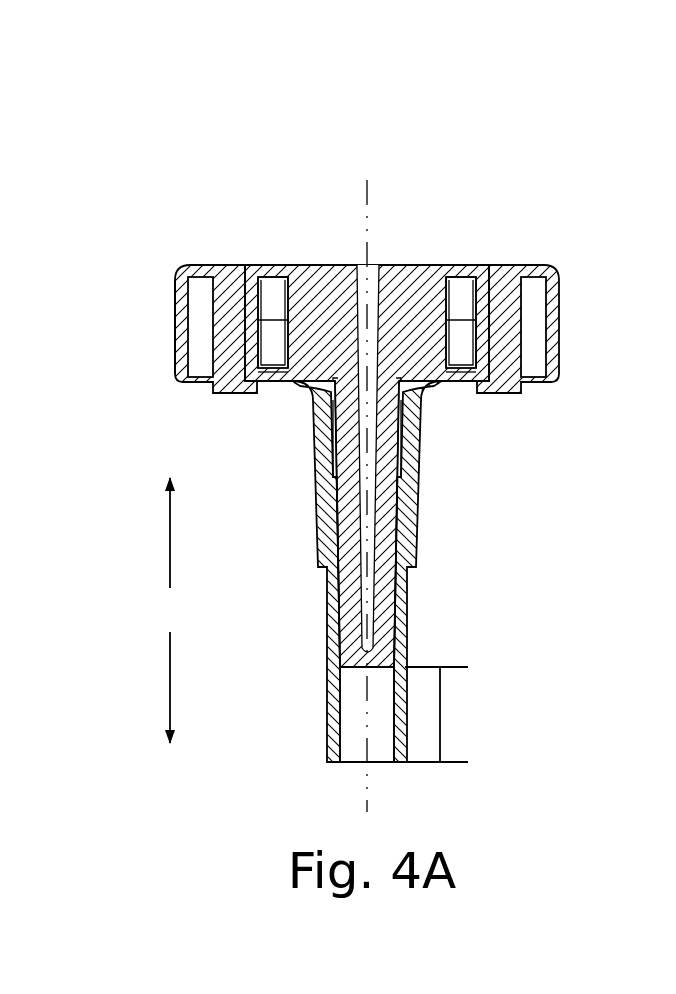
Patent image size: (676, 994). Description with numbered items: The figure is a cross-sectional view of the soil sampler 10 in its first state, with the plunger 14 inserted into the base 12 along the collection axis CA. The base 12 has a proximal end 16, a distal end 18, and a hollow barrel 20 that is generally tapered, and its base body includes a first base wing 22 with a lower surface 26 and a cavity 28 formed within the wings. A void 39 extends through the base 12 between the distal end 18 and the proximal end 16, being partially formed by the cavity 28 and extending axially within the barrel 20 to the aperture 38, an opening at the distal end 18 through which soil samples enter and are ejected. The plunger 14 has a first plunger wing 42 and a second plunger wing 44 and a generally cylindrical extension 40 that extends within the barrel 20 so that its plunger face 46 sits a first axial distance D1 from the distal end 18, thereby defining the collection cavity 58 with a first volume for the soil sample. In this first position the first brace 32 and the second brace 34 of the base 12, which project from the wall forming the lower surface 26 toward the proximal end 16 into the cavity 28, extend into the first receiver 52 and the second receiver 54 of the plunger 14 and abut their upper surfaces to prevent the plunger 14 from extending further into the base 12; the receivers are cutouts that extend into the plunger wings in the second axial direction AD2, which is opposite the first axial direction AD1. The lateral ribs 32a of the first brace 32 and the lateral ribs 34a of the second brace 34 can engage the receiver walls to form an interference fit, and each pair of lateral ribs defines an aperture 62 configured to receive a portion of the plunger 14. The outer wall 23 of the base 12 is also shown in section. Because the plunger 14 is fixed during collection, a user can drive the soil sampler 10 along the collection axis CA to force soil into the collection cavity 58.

The soil sampler 10 is at (408, 136).
The base 12 is at (409, 598).
The plunger 14 is at (346, 502).
The proximal end 16 is at (215, 262).
The distal end 18 is at (384, 764).
The barrel 20 is at (380, 632).
The first base wing 22 is at (486, 328).
The outer wall 23 is at (185, 260).
The lower surface 26 is at (457, 388).
The cavity 28 is at (504, 268).
The first brace 32 is at (518, 390).
The lateral ribs 32a is at (448, 303).
The second brace 34 is at (247, 366).
The lateral ribs 34a is at (313, 296).
The aperture 38 is at (362, 760).
The void 39 is at (330, 432).
The extension 40 is at (328, 591).
The first plunger wing 42 is at (490, 266).
The second plunger wing 44 is at (247, 260).
The plunger face 46 is at (362, 668).
The first receiver 52 is at (469, 376).
The second receiver 54 is at (273, 359).
The collection cavity 58 is at (399, 708).
The aperture 62 is at (284, 272).
The collection axis CA is at (366, 186).
The first axial direction AD1 is at (170, 677).
The second axial direction AD2 is at (170, 527).
The first axial distance D1 is at (442, 697).